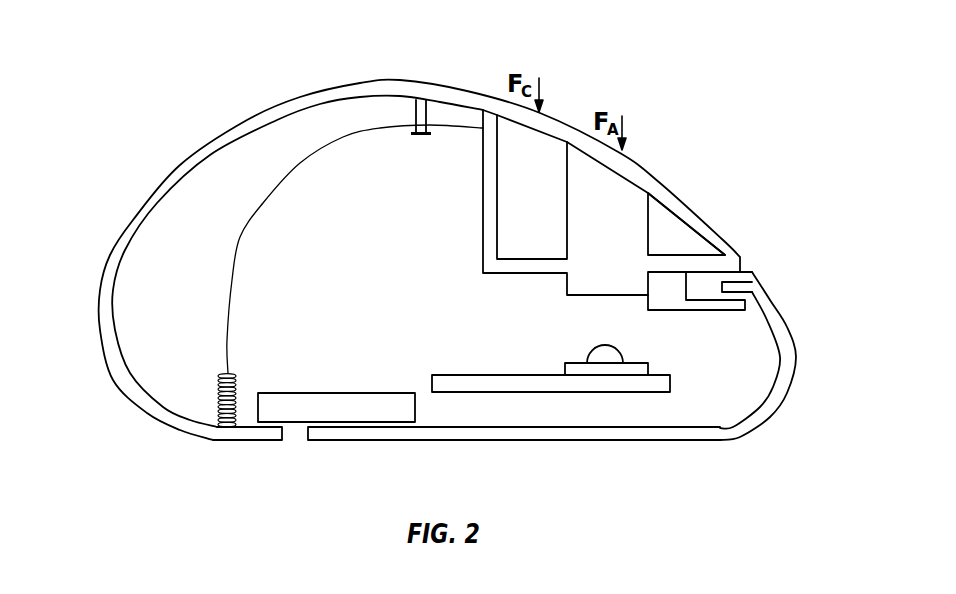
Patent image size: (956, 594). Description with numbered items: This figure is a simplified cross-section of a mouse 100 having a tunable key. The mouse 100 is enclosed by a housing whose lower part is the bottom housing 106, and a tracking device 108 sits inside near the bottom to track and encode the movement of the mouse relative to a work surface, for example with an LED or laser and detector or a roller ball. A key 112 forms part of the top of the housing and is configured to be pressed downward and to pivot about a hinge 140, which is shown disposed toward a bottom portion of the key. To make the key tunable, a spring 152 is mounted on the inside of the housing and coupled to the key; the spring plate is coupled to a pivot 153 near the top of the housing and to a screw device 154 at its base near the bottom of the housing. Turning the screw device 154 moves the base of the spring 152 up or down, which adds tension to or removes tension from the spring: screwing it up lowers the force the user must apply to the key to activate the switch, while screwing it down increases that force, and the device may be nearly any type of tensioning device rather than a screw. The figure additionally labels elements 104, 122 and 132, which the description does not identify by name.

The mouse 100 is at (134, 122).
The housing shell 104 is at (257, 118).
The bottom housing 106 is at (372, 441).
The tracking device 108 is at (337, 392).
The key 112 is at (685, 200).
The connector socket 122 is at (570, 297).
The sensor assembly 132 is at (603, 343).
The hinge 140 is at (467, 91).
The spring 152 is at (258, 207).
The pivot 153 is at (418, 112).
The screw device 154 is at (227, 429).